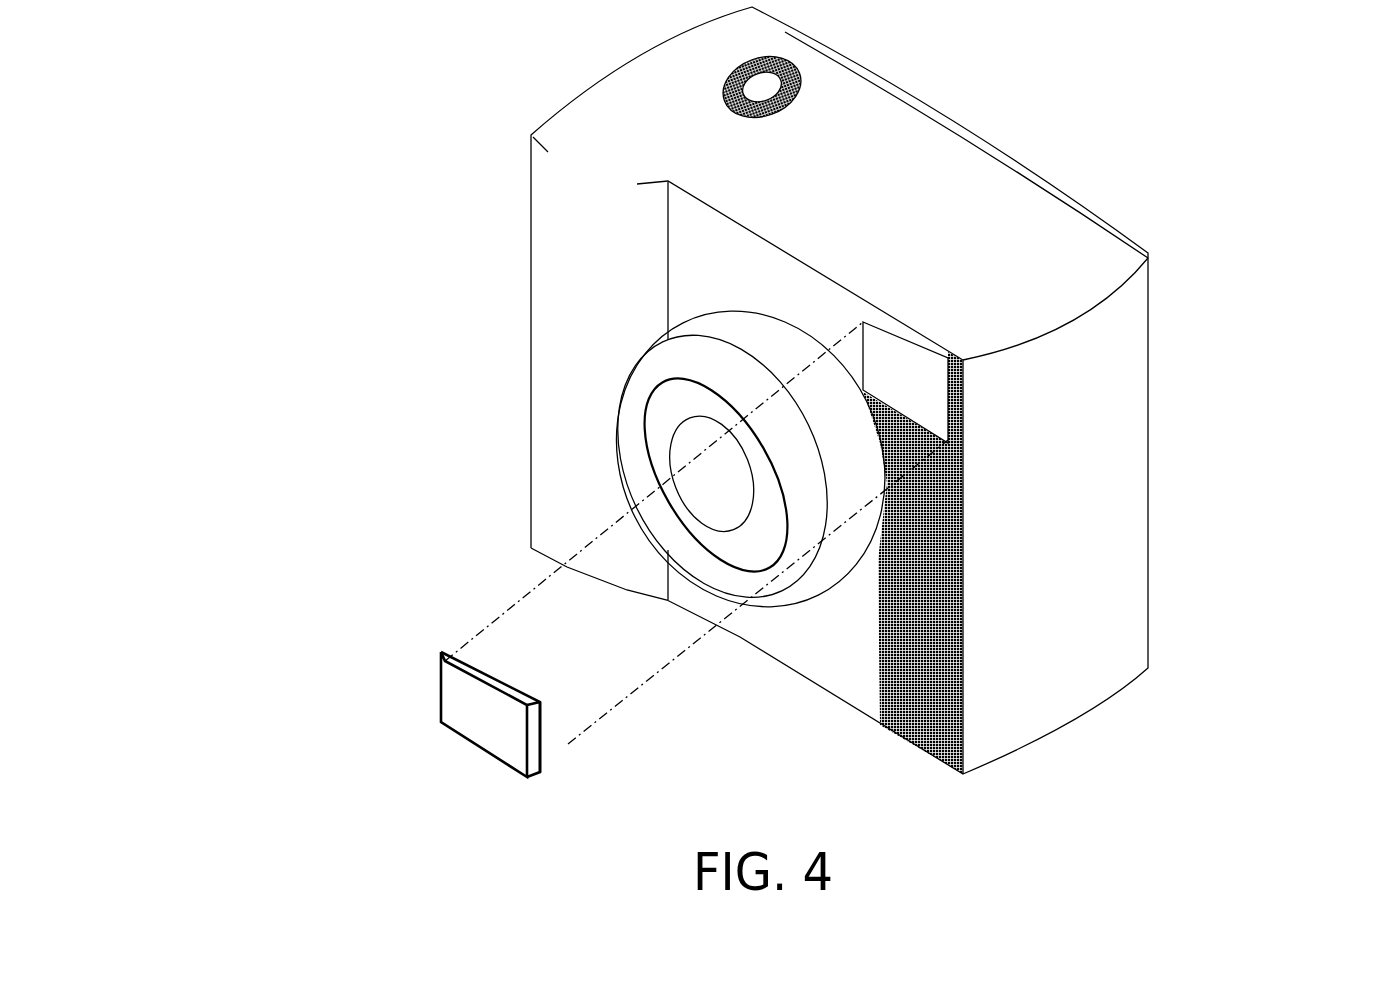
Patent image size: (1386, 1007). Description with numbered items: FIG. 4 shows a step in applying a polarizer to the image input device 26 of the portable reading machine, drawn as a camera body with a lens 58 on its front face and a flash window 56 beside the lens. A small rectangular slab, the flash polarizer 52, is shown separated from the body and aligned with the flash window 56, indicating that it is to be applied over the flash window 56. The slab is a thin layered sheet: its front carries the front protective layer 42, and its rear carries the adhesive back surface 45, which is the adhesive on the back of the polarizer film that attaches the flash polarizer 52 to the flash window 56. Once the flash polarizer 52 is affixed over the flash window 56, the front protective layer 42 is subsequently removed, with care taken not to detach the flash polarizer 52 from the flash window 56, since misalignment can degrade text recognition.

The image input device 26 is at (500, 233).
The lens 58 is at (685, 442).
The flash window 56 is at (950, 398).
The flash polarizer 52 is at (446, 655).
The front protective layer 42 is at (458, 710).
The adhesive layer or surface 45 is at (543, 748).